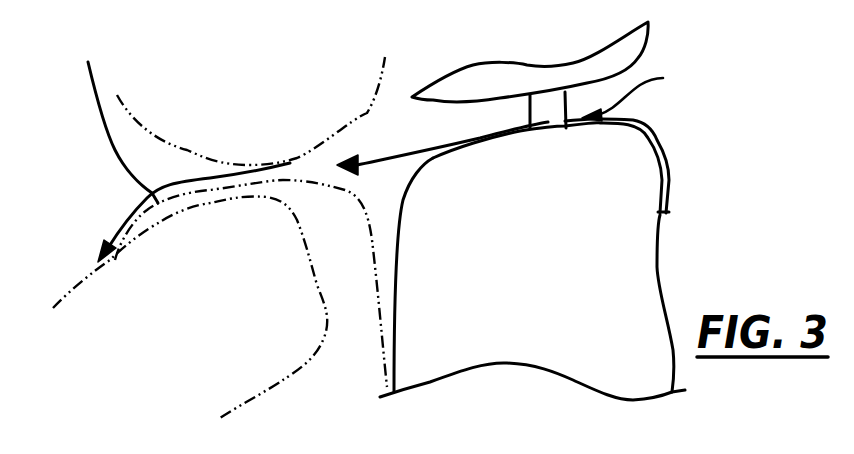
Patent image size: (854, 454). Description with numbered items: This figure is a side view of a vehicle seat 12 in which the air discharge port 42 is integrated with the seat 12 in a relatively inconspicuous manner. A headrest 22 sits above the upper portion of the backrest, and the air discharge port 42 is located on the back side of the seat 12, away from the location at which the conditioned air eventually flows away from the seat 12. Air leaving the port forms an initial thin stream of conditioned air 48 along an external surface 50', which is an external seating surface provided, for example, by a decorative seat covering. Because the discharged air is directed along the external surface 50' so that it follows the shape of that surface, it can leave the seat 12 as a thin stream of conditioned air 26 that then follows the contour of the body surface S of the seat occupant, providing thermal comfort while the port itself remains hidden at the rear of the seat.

The seat 12 is at (745, 163).
The headrest 22 is at (608, 56).
The thin stream of conditioned air 26 is at (128, 205).
The air discharge port 42 is at (665, 213).
The initial thin stream of conditioned air 48 is at (643, 123).
The external surface 50' is at (646, 92).
The body surface S is at (114, 116).